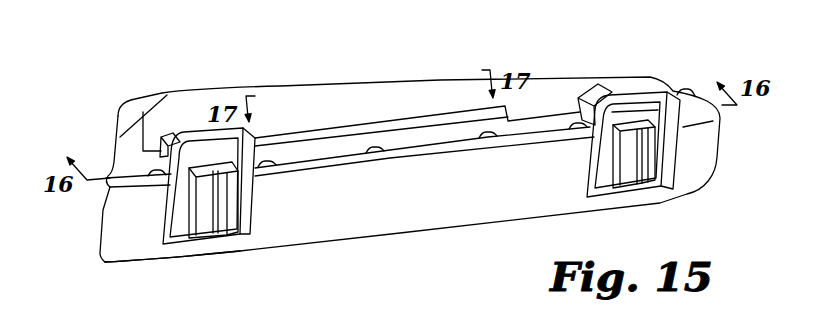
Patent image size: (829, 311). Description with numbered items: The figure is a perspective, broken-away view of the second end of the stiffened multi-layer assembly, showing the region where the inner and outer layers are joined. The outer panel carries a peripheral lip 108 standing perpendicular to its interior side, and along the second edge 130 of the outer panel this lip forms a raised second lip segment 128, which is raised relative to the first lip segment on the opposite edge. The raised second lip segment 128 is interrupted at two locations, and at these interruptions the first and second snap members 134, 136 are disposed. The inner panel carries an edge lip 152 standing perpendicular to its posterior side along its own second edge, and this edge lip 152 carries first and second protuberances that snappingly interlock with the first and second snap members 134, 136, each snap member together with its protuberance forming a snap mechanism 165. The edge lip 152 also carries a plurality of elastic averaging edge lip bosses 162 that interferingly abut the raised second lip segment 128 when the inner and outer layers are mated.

The peripheral lip 108 is at (147, 233).
The raised second lip segment 128 is at (403, 203).
The second edge 130 is at (340, 233).
The first snap member 134 is at (647, 196).
The second snap member 136 is at (228, 243).
The edge lip 152 is at (457, 135).
The elastic averaging edge lip bosses 162 is at (157, 171).
The snap mechanism 165 is at (262, 126).